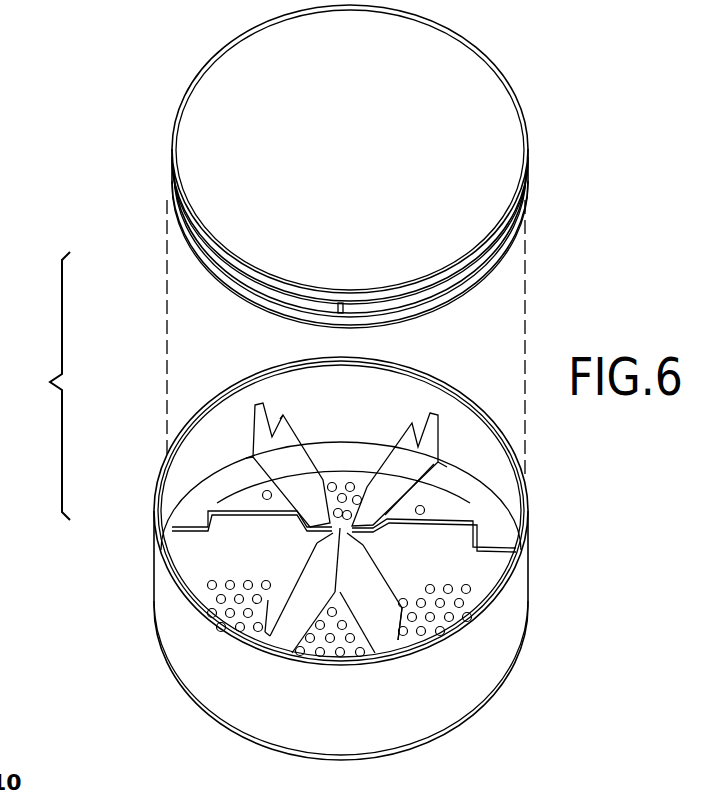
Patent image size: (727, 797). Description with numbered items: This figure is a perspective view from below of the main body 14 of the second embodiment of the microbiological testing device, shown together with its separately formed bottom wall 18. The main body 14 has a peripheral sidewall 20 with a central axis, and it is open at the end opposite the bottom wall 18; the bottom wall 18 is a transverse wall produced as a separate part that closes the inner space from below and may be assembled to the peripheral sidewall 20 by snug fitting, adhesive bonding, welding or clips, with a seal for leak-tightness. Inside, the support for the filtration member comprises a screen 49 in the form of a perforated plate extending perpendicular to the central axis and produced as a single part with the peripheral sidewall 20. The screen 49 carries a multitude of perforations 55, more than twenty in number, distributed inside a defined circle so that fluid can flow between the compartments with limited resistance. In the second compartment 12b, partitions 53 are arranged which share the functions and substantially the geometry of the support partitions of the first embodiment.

The main body 14 is at (46, 386).
The bottom wall 18 is at (193, 222).
The peripheral sidewall 20 is at (152, 577).
The second compartment 12b is at (466, 447).
The screen 49 is at (450, 606).
The partitions 53 is at (387, 470).
The perforations 55 is at (298, 637).